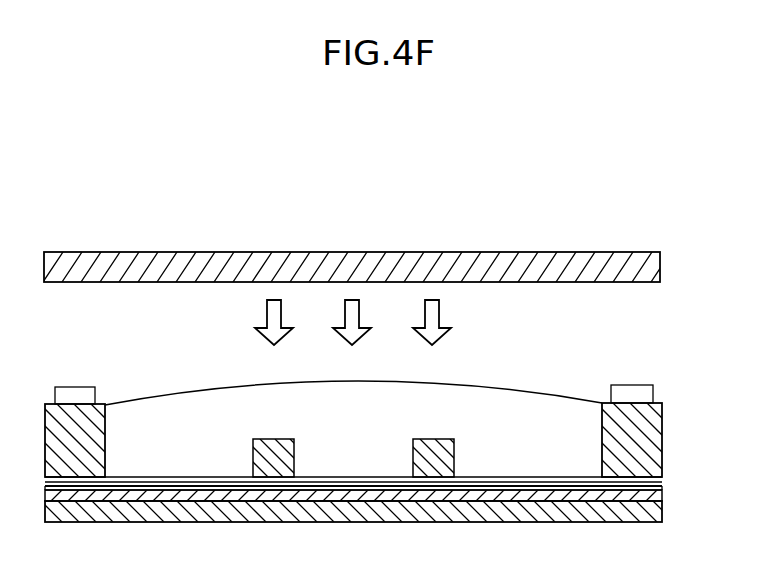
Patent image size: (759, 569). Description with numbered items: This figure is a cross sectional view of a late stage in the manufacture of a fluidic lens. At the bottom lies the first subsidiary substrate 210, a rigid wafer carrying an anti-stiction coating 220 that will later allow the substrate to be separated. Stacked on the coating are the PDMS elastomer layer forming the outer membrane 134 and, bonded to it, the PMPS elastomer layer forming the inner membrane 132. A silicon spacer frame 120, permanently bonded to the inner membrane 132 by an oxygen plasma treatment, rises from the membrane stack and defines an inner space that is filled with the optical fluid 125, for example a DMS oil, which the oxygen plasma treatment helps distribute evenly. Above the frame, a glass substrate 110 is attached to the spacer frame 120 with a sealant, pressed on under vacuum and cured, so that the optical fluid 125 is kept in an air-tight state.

The glass substrate 110 is at (662, 258).
The spacer frame 120 is at (662, 410).
The optical fluid 125 is at (367, 422).
The inner membrane 132 is at (662, 476).
The outer membrane 134 is at (662, 484).
The anti-stiction coating 220 is at (662, 493).
The first subsidiary substrate 210 is at (662, 516).